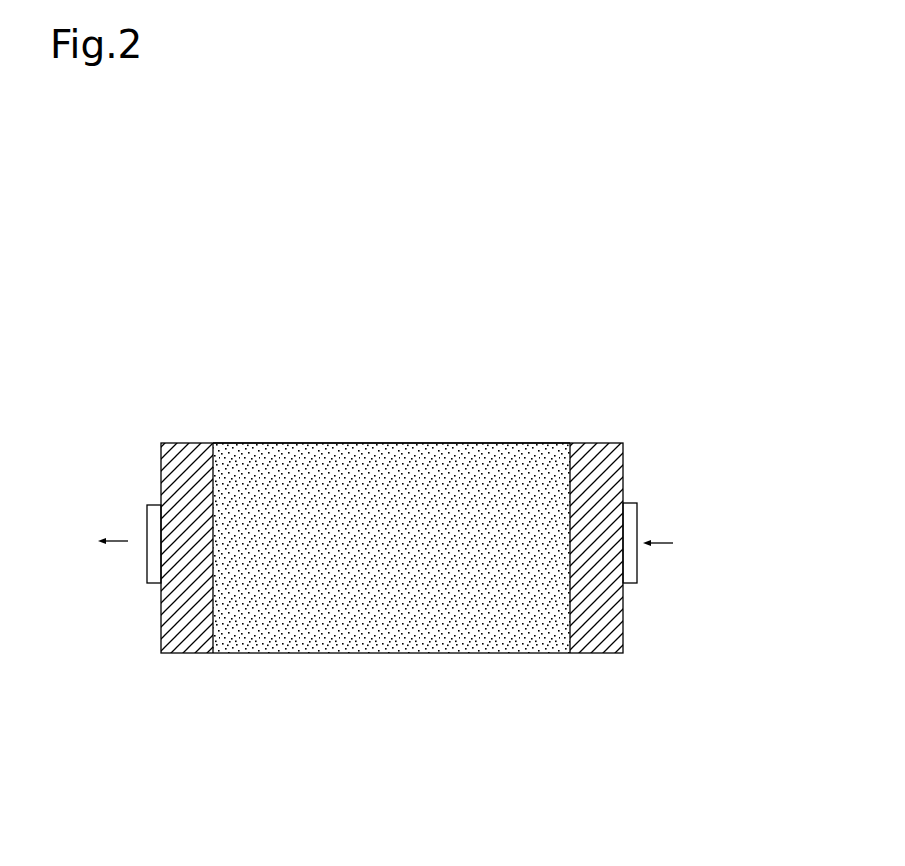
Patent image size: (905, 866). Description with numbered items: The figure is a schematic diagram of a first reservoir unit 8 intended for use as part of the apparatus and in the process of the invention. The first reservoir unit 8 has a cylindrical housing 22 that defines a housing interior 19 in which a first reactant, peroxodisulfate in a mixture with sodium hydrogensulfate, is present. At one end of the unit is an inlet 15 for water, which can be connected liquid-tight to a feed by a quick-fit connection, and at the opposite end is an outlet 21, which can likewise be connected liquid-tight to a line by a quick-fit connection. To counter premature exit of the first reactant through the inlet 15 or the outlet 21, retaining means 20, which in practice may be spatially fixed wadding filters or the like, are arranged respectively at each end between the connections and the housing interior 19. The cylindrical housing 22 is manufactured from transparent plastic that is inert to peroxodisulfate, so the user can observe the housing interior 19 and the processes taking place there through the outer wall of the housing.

The first reservoir unit 8 is at (572, 664).
The inlet 15 is at (630, 515).
The housing interior 19 is at (373, 498).
The retaining means 20 is at (183, 465).
The outlet 21 is at (153, 518).
The cylindrical housing 22 is at (463, 436).